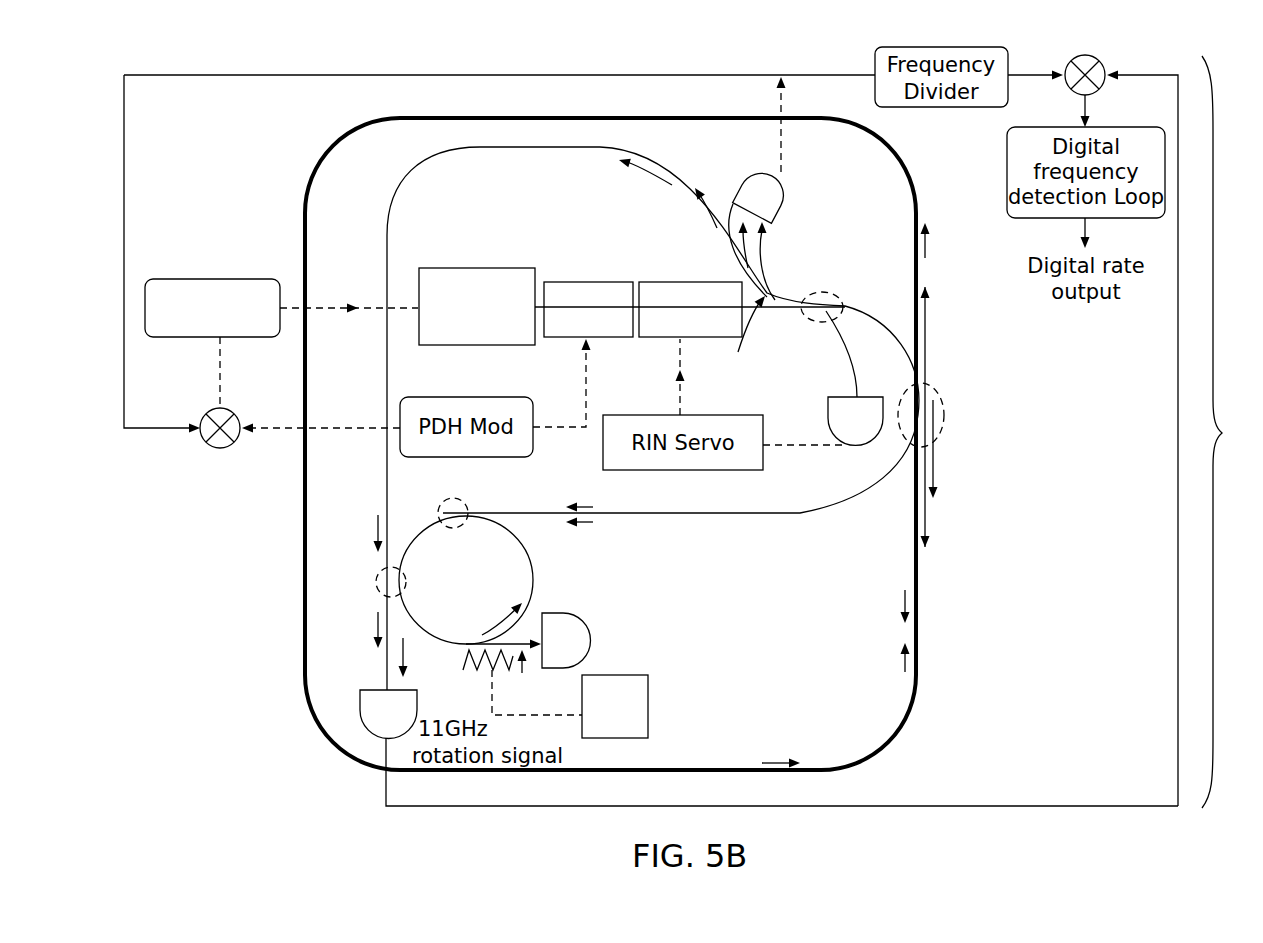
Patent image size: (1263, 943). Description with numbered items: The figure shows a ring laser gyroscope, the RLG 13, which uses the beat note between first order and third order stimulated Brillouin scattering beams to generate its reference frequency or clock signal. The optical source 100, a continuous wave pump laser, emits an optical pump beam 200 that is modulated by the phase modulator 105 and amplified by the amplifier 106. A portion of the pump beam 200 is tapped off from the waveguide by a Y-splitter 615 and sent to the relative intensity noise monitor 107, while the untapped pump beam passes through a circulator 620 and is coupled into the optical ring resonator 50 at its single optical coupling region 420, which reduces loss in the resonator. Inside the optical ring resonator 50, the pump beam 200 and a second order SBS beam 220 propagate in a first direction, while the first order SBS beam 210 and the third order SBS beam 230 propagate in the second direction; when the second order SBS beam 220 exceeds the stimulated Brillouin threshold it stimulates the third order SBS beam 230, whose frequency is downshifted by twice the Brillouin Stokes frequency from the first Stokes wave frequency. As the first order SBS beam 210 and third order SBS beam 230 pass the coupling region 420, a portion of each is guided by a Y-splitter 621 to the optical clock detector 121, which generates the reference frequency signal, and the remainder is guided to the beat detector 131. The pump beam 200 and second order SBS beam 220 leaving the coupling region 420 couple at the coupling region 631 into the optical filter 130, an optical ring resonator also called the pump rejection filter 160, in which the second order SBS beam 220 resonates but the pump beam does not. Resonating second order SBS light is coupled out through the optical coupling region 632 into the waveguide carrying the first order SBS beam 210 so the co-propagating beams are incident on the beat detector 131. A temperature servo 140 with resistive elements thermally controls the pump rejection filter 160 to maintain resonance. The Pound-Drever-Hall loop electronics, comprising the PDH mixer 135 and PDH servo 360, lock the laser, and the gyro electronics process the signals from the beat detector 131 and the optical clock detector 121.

The RLG 13 is at (1230, 432).
The optical ring resonator 50 is at (596, 118).
The optical source 100 is at (477, 268).
The phase modulator 105 is at (588, 282).
The amplifier 106 is at (678, 282).
The relative intensity noise (RIN) monitor 107 is at (855, 445).
The optical clock detector 121 is at (793, 197).
The optical filter 130 is at (533, 572).
The beat detector 131 is at (373, 689).
The PDH mixer 135 is at (229, 414).
The temperature servo 140 is at (617, 674).
The pump rejection filter 160 is at (533, 598).
The optical pump beam 200 is at (580, 506).
The first order SBS beam 210 is at (650, 172).
The second order SBS beam 220 is at (590, 523).
The third order SBS beam 230 is at (706, 186).
The PDH servo 360 is at (170, 337).
The optical coupling region 420 is at (944, 413).
The Y-splitter 615 is at (782, 315).
The circulator 620 is at (825, 320).
The Y-splitter 621 is at (741, 338).
The coupling region 631 is at (458, 500).
The optical coupling region 632 is at (404, 578).